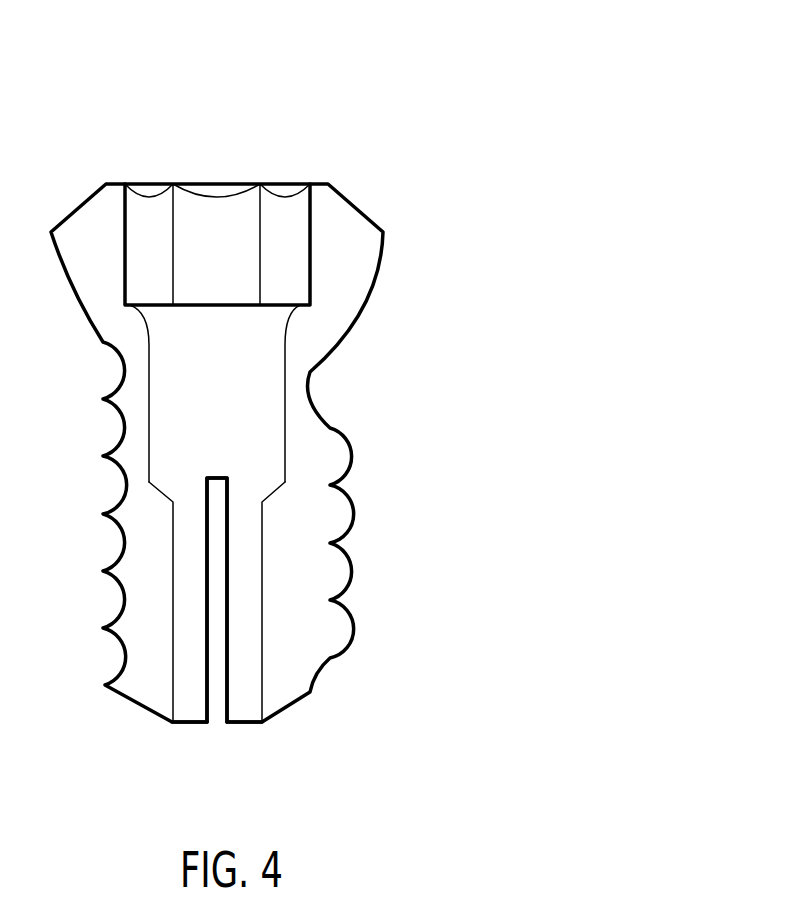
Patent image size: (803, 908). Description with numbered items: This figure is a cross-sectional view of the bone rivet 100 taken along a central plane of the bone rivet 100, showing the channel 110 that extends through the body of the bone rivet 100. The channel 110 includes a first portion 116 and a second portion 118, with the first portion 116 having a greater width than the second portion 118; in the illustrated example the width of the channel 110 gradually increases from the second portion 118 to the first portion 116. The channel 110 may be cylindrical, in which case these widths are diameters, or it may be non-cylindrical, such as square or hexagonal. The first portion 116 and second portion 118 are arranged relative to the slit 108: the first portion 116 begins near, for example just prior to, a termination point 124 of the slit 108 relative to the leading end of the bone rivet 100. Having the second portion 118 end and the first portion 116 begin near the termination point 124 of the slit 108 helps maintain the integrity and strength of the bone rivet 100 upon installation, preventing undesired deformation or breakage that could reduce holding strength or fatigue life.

The bone rivet 100 is at (392, 100).
The slit 108 is at (217, 733).
The channel 110 is at (221, 240).
The first portion 116 is at (255, 365).
The second portion 118 is at (248, 585).
The termination point 124 is at (217, 476).